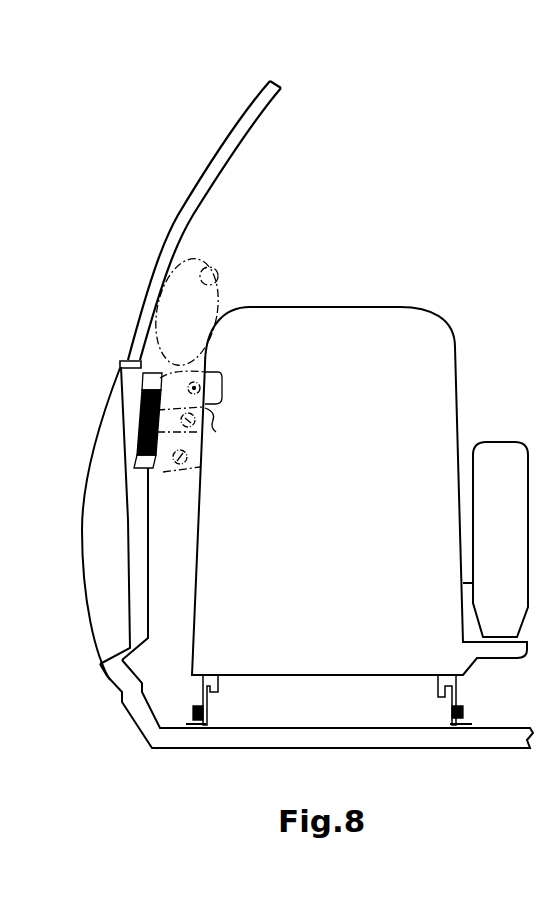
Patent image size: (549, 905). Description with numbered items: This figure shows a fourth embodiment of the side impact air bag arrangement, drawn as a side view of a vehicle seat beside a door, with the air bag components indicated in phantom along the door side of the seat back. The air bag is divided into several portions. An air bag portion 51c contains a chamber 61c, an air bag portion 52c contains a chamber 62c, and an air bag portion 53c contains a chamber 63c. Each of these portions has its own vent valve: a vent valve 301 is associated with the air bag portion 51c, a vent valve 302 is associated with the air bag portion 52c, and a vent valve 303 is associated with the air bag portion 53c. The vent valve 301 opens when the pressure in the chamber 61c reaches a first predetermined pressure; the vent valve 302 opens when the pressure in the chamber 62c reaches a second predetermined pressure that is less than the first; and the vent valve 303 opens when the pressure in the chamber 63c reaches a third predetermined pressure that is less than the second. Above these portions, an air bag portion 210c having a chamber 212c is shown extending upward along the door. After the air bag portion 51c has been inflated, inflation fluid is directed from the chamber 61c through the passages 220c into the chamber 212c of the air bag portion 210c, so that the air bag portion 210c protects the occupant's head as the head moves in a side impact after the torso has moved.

The air bag portion 210c is at (193, 262).
The chamber 212c is at (218, 280).
The passages 220c is at (121, 363).
The chamber 61c is at (208, 378).
The air bag portion 51c is at (222, 378).
The vent valve 301 is at (213, 399).
The air bag portion 52c is at (213, 420).
The chamber 62c is at (203, 430).
The vent valve 302 is at (200, 437).
The air bag portion 53c is at (200, 450).
The chamber 63c is at (198, 466).
The vent valve 303 is at (175, 462).